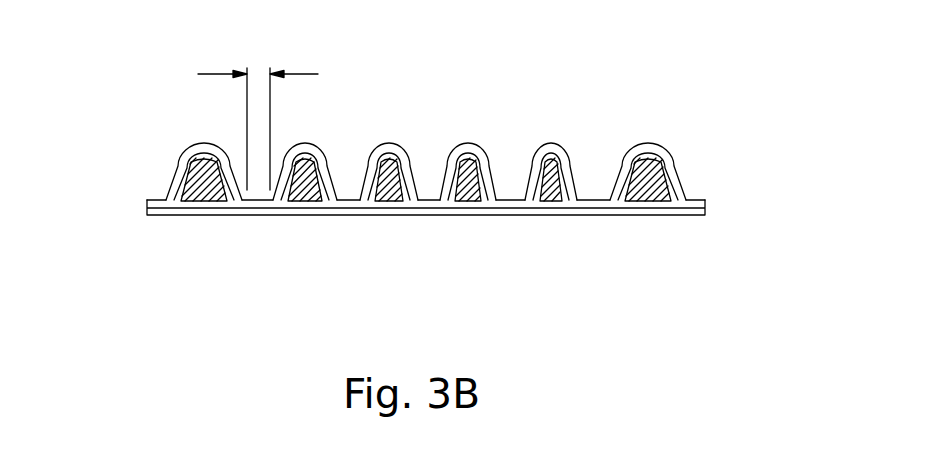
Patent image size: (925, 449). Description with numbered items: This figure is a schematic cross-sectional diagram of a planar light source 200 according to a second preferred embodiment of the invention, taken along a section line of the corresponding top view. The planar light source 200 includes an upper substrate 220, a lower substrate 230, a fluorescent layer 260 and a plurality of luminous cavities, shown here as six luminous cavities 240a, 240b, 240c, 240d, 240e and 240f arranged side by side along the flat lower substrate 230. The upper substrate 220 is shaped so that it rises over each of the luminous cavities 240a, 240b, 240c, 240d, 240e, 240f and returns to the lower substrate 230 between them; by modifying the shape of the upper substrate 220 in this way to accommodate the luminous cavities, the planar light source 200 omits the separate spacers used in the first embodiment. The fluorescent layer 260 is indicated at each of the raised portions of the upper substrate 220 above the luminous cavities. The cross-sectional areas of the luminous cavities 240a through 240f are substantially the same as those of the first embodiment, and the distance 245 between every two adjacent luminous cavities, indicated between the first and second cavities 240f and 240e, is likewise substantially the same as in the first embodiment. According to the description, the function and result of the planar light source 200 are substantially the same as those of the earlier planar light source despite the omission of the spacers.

The planar light source 200 is at (432, 137).
The upper substrate 220 is at (650, 146).
The lower substrate 230 is at (705, 210).
The luminous cavity 240a is at (653, 193).
The luminous cavity 240b is at (555, 193).
The luminous cavity 240c is at (472, 193).
The luminous cavity 240d is at (392, 193).
The luminous cavity 240e is at (311, 193).
The luminous cavity 240f is at (212, 193).
The distance 245 is at (258, 113).
The fluorescent layer 260 is at (190, 172).